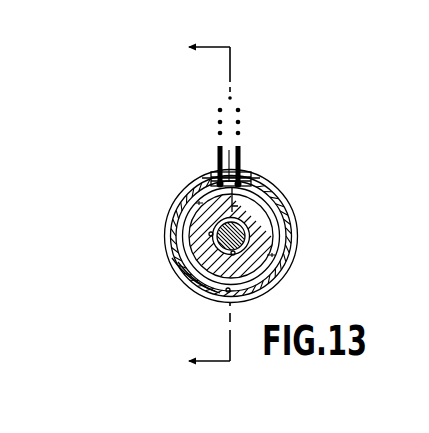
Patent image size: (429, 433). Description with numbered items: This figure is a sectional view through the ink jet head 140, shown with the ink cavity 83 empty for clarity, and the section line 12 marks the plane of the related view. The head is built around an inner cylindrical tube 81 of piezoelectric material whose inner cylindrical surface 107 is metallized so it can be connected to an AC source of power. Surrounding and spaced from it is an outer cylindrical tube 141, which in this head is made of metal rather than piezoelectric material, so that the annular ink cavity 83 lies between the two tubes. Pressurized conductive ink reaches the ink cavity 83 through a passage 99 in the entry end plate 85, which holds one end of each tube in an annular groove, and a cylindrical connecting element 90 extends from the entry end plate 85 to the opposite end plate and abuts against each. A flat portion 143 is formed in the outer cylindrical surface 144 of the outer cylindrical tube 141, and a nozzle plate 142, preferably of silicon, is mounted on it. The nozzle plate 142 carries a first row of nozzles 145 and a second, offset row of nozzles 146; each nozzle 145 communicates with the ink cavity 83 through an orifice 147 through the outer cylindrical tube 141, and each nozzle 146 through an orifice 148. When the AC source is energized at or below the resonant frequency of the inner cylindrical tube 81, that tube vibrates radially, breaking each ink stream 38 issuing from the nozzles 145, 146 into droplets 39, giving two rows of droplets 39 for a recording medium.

The section line 12- 12 is at (210, 207).
The ink stream 38 is at (243, 160).
The droplets 39 is at (242, 109).
The inner cylindrical tube 81 is at (202, 283).
The ink cavity 83 is at (268, 274).
The entry end plate 85 is at (300, 224).
The connecting element 90 is at (275, 211).
The passage 99 is at (226, 293).
The inner cylindrical surface 107 is at (209, 235).
The ink jet head 140 is at (157, 213).
The outer cylindrical tube 141 is at (176, 204).
The nozzle plate 142 is at (252, 176).
The flat portion 143 is at (217, 150).
The outer cylindrical surface 144 is at (193, 270).
The nozzles 145 is at (253, 181).
The nozzles 146 is at (215, 170).
The orifice 147 is at (258, 188).
The orifice 148 is at (209, 181).